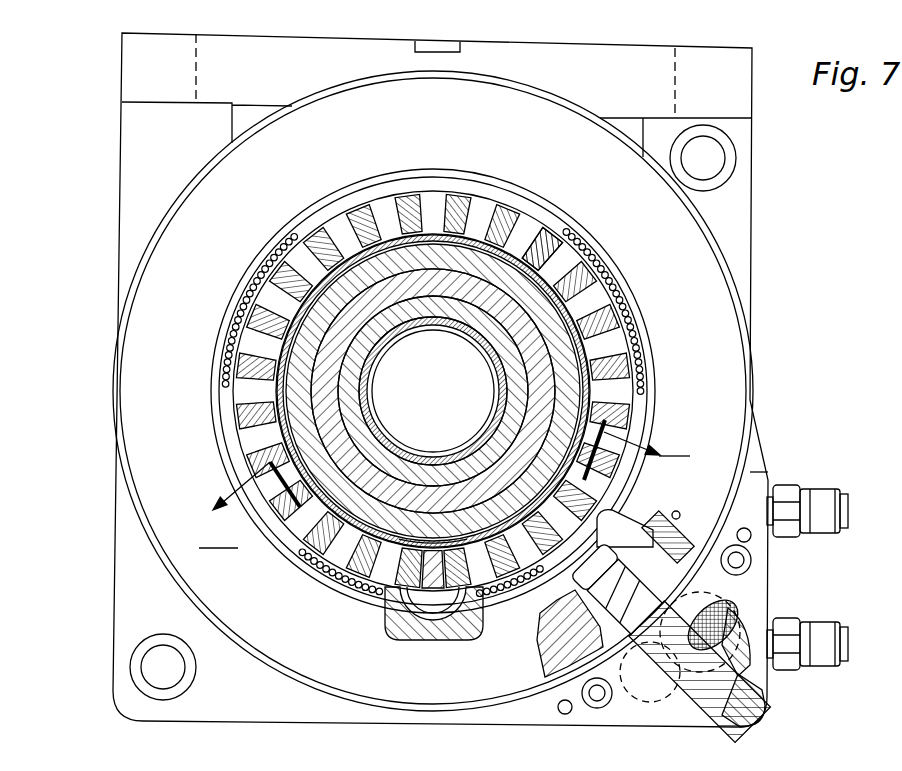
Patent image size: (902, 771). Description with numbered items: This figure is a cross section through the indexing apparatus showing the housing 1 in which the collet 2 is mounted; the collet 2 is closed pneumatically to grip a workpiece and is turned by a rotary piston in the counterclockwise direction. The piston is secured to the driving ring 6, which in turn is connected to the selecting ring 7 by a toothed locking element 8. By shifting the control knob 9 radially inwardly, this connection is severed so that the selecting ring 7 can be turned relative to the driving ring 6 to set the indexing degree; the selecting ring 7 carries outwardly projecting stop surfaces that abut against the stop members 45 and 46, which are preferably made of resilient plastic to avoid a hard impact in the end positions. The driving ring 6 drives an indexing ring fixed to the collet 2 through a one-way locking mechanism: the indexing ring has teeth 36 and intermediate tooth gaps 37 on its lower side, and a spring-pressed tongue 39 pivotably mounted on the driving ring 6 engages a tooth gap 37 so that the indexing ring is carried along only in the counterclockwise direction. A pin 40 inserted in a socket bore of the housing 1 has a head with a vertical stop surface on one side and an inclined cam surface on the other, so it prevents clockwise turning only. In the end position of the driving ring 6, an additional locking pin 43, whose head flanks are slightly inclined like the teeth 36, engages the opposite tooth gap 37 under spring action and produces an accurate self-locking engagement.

The housing 1 is at (160, 153).
The collet 2 is at (497, 378).
The driving ring 6 is at (550, 645).
The selecting ring 7 is at (672, 222).
The toothed locking element 8 is at (600, 572).
The control knob 9 is at (767, 692).
The teeth 36 is at (247, 458).
The tooth gaps 37 is at (253, 433).
The tongue 39 is at (523, 545).
The pin 40 is at (345, 556).
The locking pin 43 is at (400, 625).
The stop member 45 is at (655, 688).
The stop member 46 is at (707, 627).